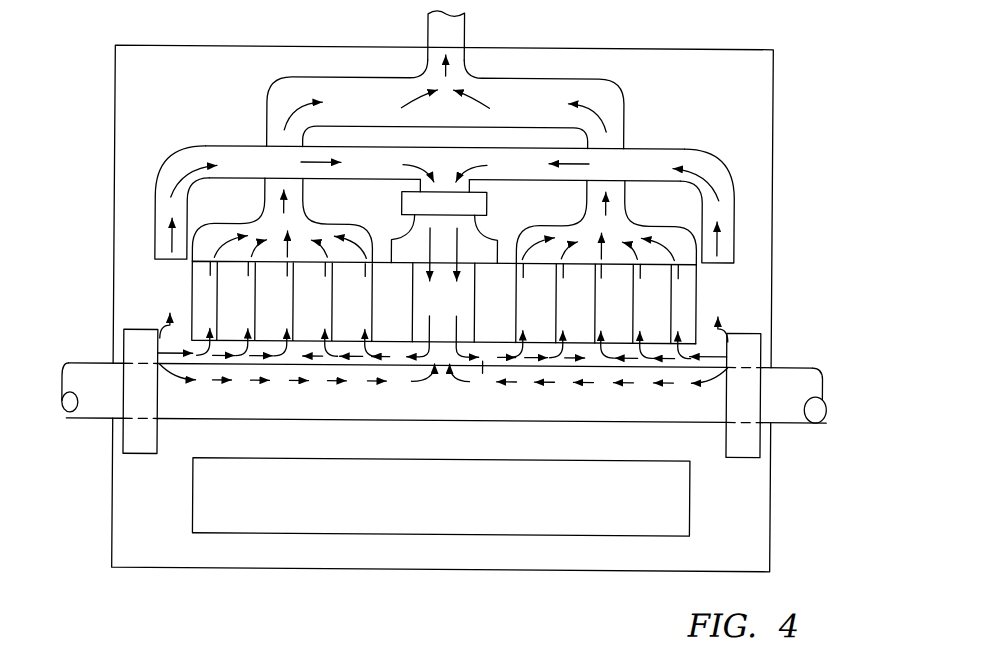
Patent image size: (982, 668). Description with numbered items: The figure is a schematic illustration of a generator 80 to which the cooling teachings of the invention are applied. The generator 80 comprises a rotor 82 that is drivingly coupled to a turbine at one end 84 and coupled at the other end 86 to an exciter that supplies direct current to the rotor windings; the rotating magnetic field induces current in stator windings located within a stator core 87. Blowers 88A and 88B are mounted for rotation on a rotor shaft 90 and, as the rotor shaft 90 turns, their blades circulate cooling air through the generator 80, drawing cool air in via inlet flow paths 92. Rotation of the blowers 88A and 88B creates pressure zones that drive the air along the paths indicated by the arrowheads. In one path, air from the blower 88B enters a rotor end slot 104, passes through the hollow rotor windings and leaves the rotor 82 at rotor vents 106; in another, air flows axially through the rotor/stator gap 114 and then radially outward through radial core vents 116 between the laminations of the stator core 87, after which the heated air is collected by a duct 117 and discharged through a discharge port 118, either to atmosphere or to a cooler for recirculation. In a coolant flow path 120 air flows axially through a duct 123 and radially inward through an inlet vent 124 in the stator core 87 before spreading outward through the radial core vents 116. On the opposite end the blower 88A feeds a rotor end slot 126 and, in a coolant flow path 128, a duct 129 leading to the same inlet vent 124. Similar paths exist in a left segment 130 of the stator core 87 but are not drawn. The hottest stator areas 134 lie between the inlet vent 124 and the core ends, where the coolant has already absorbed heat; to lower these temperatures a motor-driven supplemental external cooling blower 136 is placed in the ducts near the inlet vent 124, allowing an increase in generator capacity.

The generator 80 is at (113, 600).
The rotor 82 is at (715, 426).
The end 84 is at (824, 416).
The end 86 is at (66, 417).
The stator core 87 is at (192, 283).
The blower 88A is at (139, 458).
The blower 88B is at (745, 458).
The rotor shaft 90 is at (306, 409).
The inlet flow paths 92 is at (102, 356).
The rotor end slot 104 is at (722, 376).
The rotor vents 106 is at (445, 383).
The rotor/stator gap 114 is at (483, 373).
The radial core vents 116 is at (312, 285).
The duct 117 is at (530, 78).
The discharge port 118 is at (425, 21).
The coolant flow path 120 is at (718, 240).
The duct 123 is at (663, 146).
The inlet vent 124 is at (473, 302).
The rotor end slot 126 is at (164, 372).
The coolant flow path 128 is at (165, 245).
The duct 129 is at (168, 162).
The left segment 130 is at (303, 535).
The hottest stator areas 134 is at (345, 324).
The supplemental external cooling blower 136 is at (402, 206).